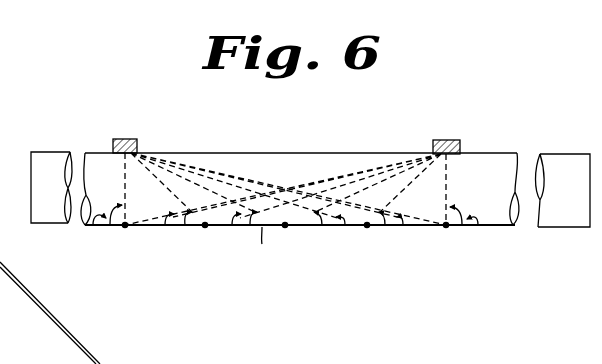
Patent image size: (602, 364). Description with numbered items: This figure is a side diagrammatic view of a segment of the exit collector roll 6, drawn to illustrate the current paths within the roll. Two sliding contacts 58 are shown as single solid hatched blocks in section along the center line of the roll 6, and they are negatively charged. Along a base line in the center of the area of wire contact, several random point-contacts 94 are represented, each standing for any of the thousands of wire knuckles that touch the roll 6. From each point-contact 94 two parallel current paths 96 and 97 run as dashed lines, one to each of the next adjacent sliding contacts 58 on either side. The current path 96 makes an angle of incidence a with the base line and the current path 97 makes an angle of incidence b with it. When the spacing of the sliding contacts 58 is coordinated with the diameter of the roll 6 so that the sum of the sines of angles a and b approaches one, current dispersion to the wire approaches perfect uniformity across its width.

The exit collector roll 6 is at (490, 153).
The sliding contacts 58 is at (127, 138).
The point-contacts 94 is at (123, 227).
The current path 96 is at (120, 167).
The current path 97 is at (391, 170).
The angle of incidence a is at (97, 227).
The angle of incidence b is at (163, 227).